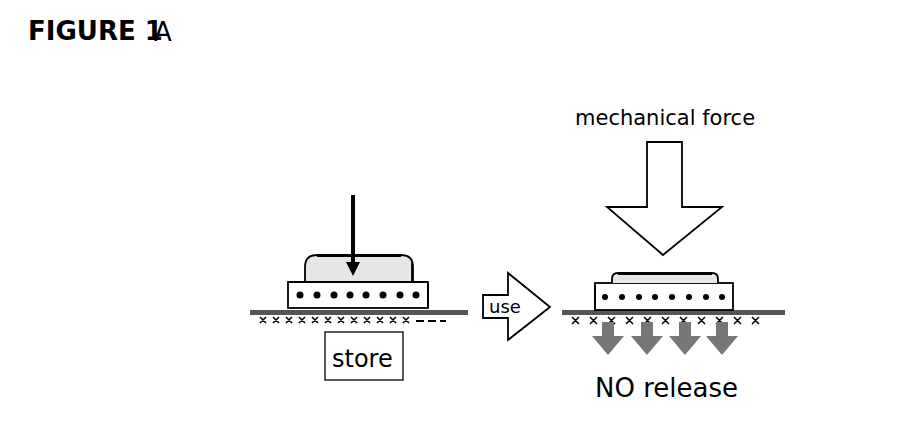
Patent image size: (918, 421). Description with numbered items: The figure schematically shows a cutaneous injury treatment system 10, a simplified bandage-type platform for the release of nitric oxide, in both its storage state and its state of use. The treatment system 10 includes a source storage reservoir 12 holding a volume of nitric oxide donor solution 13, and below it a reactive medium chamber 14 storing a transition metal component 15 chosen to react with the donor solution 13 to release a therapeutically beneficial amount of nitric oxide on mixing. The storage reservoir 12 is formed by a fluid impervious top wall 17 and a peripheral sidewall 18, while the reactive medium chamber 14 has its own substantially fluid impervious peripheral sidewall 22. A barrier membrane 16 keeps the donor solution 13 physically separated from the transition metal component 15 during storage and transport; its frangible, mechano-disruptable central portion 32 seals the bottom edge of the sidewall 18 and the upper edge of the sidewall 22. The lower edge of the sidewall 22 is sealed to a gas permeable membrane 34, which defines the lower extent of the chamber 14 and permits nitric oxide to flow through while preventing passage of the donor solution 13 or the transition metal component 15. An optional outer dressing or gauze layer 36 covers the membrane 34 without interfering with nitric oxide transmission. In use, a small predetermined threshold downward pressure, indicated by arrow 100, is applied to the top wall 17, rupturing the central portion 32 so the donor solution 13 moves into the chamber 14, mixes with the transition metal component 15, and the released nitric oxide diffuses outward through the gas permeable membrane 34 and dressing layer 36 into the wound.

The treatment system 10 is at (205, 160).
The source storage reservoir 12 is at (403, 252).
The nitric oxide donor solution 13 is at (772, 237).
The reactive medium chamber 14 is at (426, 280).
The transition metal component 15 is at (305, 294).
The barrier membrane 16 is at (294, 279).
The top wall 17 is at (373, 254).
The peripheral sidewall 18 is at (413, 270).
The peripheral sidewall 22 is at (427, 300).
The mechano-disruptable central portion 32 is at (338, 283).
The gas permeable membrane 34 is at (284, 318).
The dressing or gauze layer 36 is at (431, 322).
The downward pressure arrow 100 is at (672, 175).